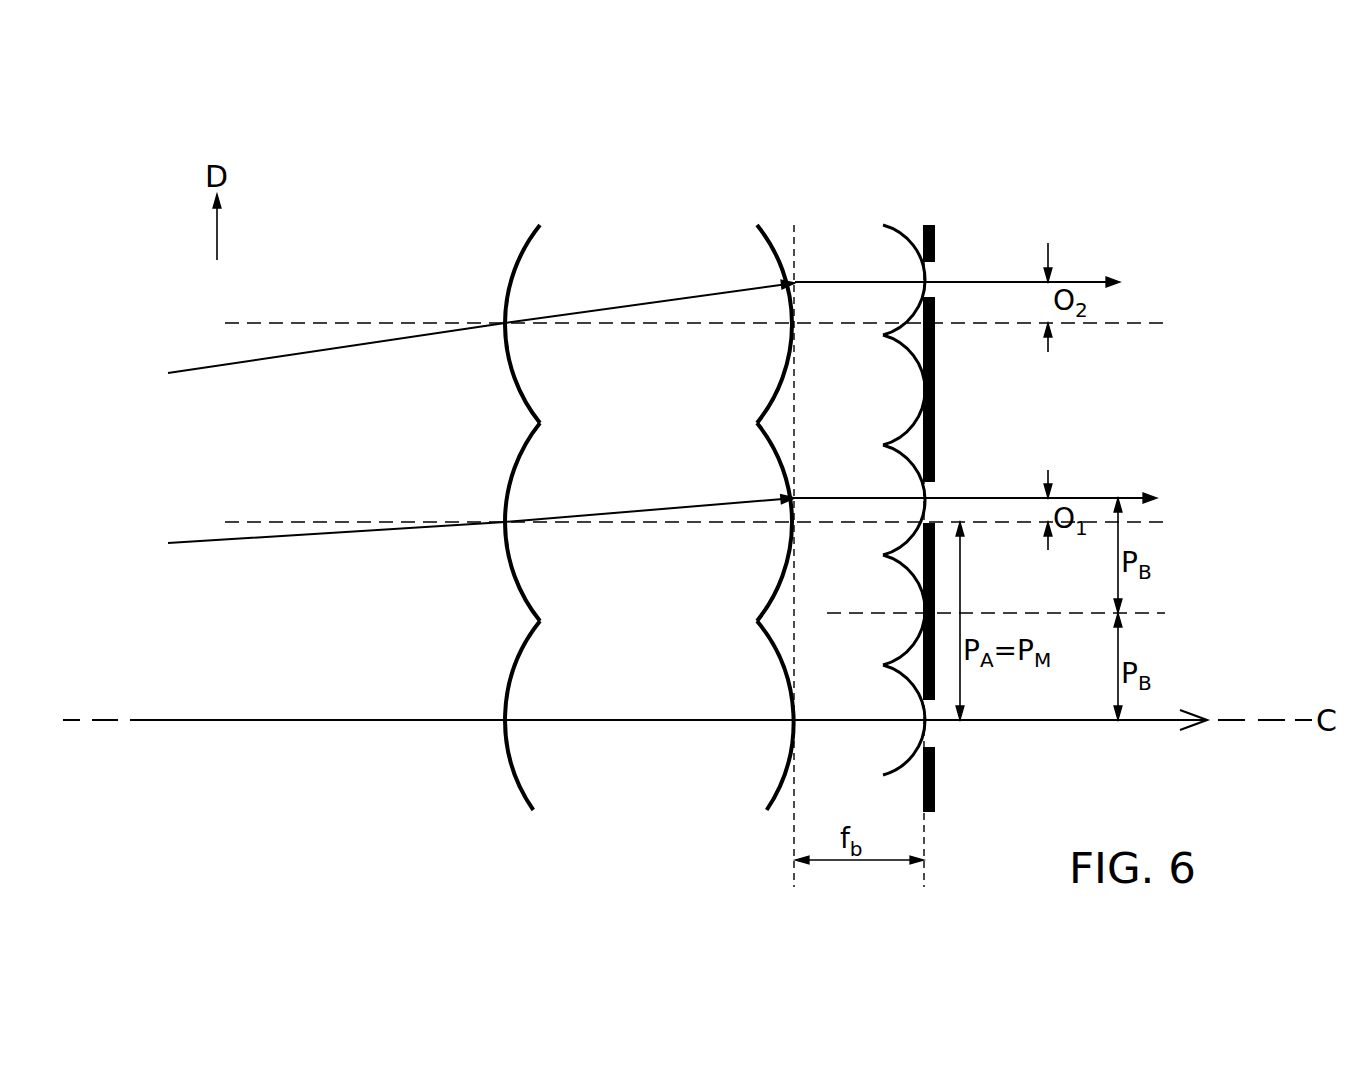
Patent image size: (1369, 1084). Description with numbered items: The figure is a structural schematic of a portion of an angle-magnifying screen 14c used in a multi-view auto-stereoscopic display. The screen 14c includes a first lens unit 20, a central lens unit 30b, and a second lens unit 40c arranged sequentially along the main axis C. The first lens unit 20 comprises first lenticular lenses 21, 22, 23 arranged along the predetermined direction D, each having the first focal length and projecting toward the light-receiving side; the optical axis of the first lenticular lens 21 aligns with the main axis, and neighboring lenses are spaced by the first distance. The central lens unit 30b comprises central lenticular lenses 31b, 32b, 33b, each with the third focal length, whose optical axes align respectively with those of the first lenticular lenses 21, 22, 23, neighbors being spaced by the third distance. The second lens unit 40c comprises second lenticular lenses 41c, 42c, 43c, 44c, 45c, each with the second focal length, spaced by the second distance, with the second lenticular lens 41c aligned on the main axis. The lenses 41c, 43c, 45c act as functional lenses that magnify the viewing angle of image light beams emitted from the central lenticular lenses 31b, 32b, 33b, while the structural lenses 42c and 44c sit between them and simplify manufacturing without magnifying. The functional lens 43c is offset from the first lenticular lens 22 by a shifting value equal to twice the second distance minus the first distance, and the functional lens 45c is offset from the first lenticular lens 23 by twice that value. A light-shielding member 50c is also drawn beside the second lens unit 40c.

The angle-magnifying screen 14c is at (442, 134).
The first lens unit 20 is at (527, 179).
The first lenticular lens 21 is at (518, 787).
The first lenticular lens 22 is at (516, 597).
The first lenticular lens 23 is at (514, 262).
The central lens unit 30b is at (777, 163).
The central lenticular lens 31b is at (782, 661).
The central lenticular lens 32b is at (780, 460).
The central lenticular lens 33b is at (780, 262).
The second lens unit 40c is at (869, 146).
The second lenticular lens 41c is at (920, 694).
The second lenticular lens 42c is at (920, 591).
The second lenticular lens 43c is at (920, 479).
The second lenticular lens 44c is at (920, 371).
The second lenticular lens 45c is at (922, 262).
The light shielding member 50c is at (935, 243).